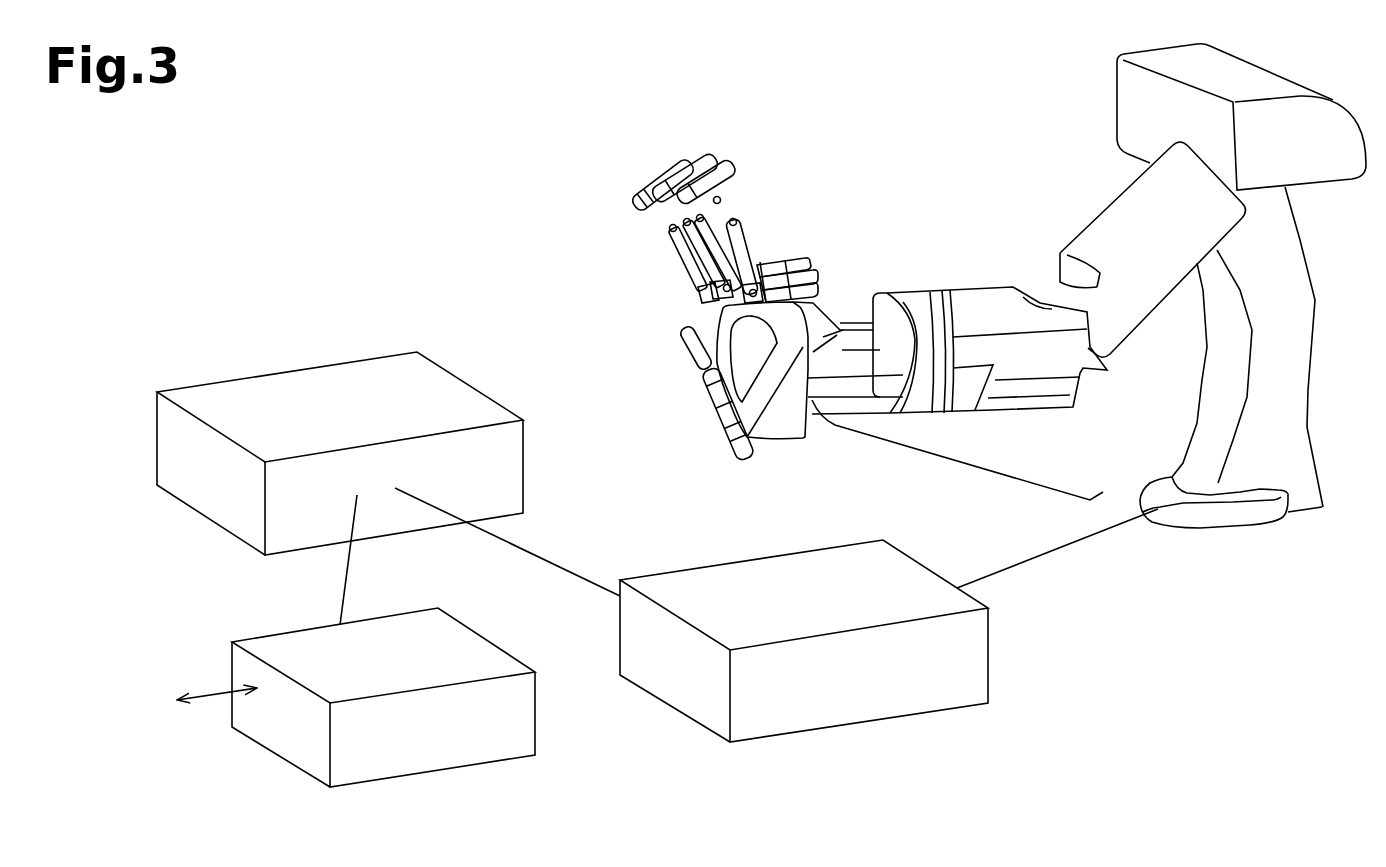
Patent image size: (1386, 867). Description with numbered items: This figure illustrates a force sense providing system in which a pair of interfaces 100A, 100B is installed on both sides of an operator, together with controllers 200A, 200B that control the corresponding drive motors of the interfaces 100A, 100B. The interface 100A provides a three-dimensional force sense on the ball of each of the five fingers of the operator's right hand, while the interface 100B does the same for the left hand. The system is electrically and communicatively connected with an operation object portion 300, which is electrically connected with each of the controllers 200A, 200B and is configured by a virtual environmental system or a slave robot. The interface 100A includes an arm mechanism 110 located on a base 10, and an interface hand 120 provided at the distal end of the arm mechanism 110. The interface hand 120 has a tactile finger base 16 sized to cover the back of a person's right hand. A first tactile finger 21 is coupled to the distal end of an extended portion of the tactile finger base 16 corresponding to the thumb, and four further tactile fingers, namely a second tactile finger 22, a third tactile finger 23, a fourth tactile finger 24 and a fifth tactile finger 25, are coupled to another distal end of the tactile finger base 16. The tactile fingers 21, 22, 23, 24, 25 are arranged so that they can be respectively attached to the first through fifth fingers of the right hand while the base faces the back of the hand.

The interface 100A is at (1050, 140).
The interface 100B is at (168, 714).
The base 10 is at (1268, 515).
The arm mechanism 110 is at (992, 505).
The interface hand 120 is at (893, 197).
The tactile finger base 16 is at (792, 424).
The first tactile finger 21 is at (703, 387).
The second tactile finger 22 is at (752, 232).
The third tactile finger 23 is at (727, 162).
The fourth tactile finger 24 is at (697, 158).
The fifth tactile finger 25 is at (657, 228).
The controller 200A is at (872, 779).
The controller 200B is at (512, 812).
The operation object portion 300 is at (330, 344).